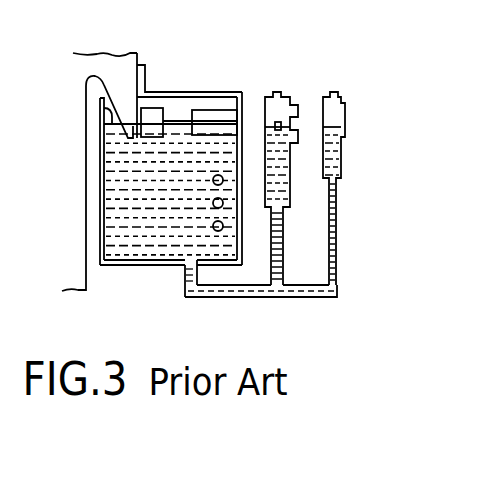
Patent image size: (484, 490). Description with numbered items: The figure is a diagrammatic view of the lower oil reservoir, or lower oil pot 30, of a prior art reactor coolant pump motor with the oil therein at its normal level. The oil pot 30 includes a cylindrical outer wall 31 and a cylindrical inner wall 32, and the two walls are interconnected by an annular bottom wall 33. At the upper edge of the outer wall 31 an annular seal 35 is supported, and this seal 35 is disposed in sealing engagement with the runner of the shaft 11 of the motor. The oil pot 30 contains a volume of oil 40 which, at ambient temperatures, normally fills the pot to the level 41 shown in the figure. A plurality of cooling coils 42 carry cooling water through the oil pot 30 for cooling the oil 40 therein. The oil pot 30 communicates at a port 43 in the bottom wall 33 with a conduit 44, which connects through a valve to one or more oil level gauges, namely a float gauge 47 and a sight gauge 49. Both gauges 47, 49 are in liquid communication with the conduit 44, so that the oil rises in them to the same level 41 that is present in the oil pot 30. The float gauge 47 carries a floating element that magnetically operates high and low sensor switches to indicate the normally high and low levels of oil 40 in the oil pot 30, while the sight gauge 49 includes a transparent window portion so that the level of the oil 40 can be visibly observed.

The shaft 11 is at (100, 55).
The lower oil pot 30 is at (203, 68).
The cylindrical outer wall 31 is at (245, 101).
The cylindrical inner wall 32 is at (100, 241).
The annular bottom wall 33 is at (117, 266).
The annular seal 35 is at (165, 91).
The oil 40 is at (100, 188).
The level 41 is at (100, 109).
The cooling coils 42 is at (223, 206).
The port 43 is at (187, 260).
The conduit 44 is at (262, 297).
The float gauge 47 is at (290, 177).
The sight gauge 49 is at (341, 160).